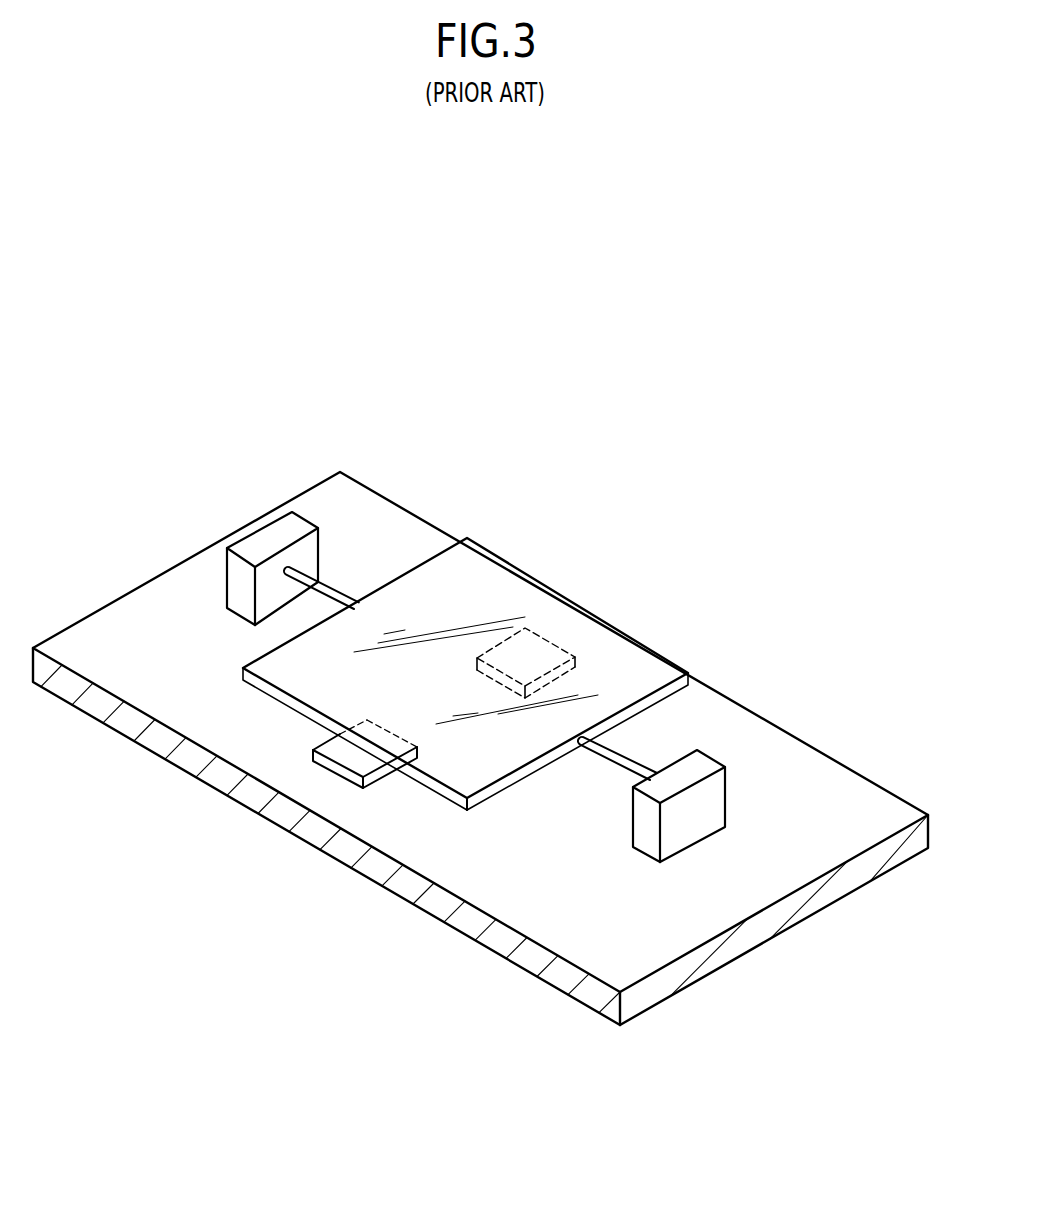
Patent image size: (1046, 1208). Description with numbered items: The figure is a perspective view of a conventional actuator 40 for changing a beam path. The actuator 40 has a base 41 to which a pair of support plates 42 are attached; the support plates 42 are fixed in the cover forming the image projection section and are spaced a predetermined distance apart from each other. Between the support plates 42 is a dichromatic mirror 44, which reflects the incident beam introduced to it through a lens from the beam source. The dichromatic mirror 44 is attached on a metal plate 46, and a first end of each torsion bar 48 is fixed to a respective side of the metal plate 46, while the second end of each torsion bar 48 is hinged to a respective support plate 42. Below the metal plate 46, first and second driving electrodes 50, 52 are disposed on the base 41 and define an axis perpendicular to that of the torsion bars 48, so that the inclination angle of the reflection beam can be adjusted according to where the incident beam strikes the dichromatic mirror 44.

The actuator 40 is at (480, 693).
The base 41 is at (470, 927).
The support plates 42 is at (238, 587).
The dichromatic mirror 44 is at (515, 590).
The metal plate 46 is at (508, 782).
The torsion bars 48 is at (322, 587).
The first driving electrode 50 is at (358, 777).
The second driving electrode 52 is at (562, 653).